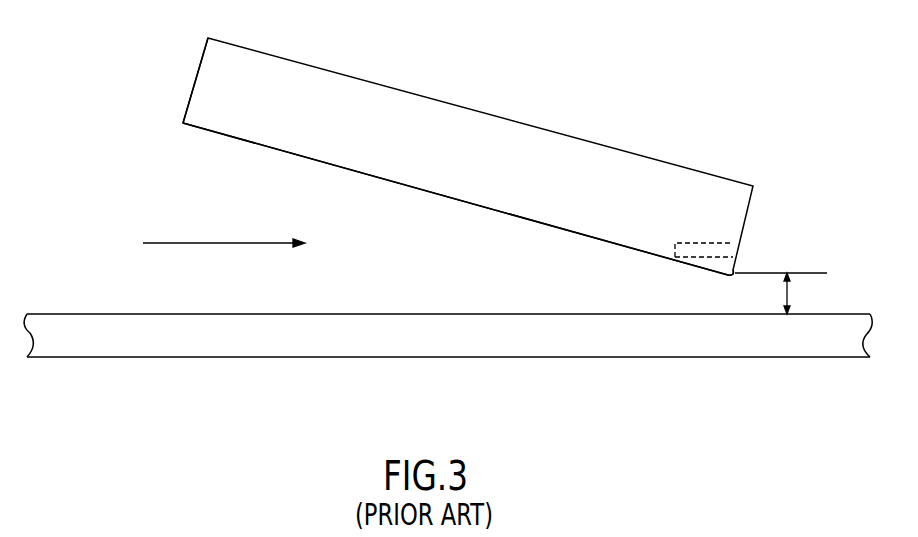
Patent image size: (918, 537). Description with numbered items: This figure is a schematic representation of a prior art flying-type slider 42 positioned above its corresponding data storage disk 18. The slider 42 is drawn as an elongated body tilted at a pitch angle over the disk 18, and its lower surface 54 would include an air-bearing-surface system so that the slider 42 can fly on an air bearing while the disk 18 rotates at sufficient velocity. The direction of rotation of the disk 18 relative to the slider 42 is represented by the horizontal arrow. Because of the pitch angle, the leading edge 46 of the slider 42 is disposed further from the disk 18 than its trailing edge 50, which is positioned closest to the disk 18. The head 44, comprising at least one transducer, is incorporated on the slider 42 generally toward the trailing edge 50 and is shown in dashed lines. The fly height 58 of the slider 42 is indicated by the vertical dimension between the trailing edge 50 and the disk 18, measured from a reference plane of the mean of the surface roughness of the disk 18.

The disk 18 is at (230, 315).
The slider 42 is at (477, 165).
The head 44 is at (695, 257).
The leading edge 46 is at (183, 123).
The trailing edge 50 is at (733, 276).
The lower surface 54 is at (264, 147).
The fly height 58 is at (787, 296).